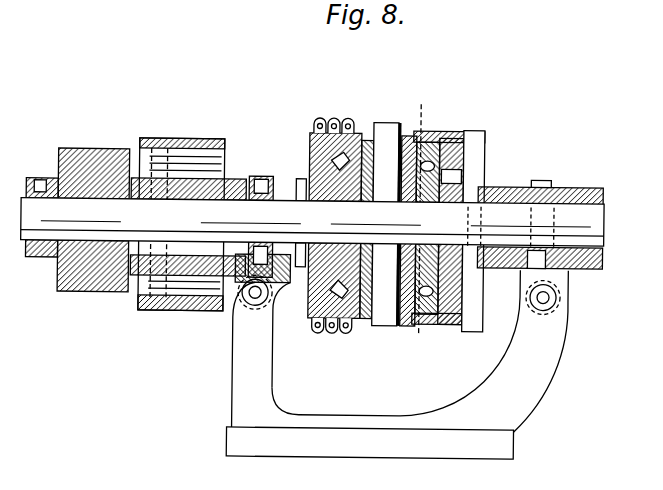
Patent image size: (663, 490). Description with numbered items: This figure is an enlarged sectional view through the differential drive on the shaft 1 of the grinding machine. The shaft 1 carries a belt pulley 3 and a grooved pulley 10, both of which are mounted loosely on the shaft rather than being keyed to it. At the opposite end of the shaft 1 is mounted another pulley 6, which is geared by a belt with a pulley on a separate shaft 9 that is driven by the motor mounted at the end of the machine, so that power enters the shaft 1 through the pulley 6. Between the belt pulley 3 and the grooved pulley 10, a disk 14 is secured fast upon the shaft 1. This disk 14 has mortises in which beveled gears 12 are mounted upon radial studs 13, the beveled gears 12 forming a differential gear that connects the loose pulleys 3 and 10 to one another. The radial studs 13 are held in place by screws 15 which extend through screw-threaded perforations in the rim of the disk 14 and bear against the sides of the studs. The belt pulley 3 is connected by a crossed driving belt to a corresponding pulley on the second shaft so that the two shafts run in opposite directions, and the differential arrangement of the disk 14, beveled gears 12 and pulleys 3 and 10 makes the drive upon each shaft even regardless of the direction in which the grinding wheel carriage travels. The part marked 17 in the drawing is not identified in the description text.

The shaft 1 is at (584, 221).
The belt pulley 3 is at (484, 132).
The pulley 6 is at (176, 140).
The shaft 9 is at (415, 230).
The grooved pulley 10 is at (310, 134).
The beveled gear 12 is at (431, 138).
The radial stud 13 is at (392, 121).
The disk 14 is at (461, 178).
The screw 15 is at (343, 122).
The spring 17 is at (319, 121).